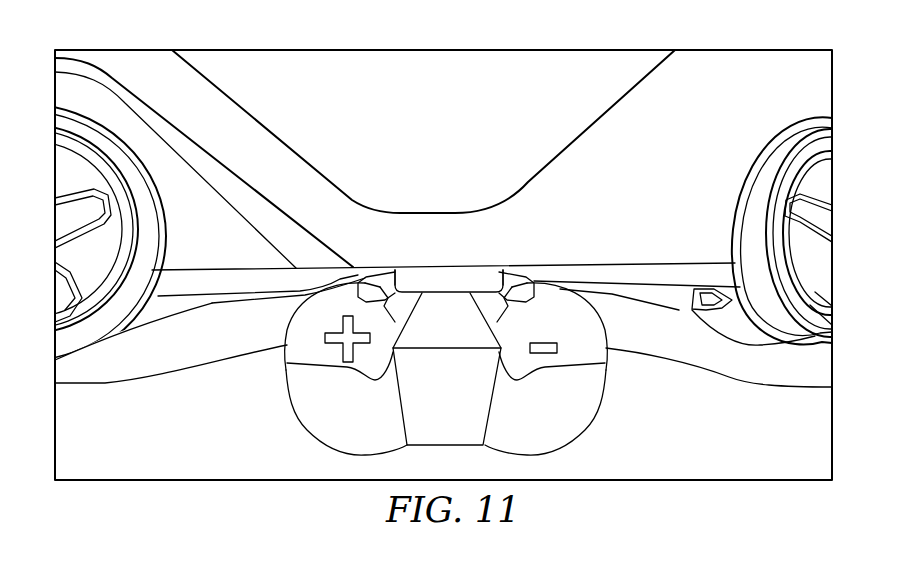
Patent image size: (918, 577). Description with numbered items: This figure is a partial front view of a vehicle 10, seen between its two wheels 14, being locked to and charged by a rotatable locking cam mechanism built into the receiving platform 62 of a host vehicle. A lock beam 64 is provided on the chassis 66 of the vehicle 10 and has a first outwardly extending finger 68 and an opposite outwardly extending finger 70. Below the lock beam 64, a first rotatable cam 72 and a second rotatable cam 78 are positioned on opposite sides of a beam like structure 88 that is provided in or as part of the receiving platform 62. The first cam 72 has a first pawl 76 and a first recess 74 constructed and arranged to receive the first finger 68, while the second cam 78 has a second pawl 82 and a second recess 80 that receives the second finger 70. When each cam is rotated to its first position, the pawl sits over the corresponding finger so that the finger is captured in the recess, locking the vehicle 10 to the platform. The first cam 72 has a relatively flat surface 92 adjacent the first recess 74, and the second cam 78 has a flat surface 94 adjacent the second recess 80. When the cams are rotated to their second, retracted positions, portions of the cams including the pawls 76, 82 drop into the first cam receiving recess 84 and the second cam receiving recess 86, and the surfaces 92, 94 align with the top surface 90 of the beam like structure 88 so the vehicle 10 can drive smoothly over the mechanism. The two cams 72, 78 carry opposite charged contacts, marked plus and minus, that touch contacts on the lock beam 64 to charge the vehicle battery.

The vehicle 10 is at (700, 78).
The wheels 14 is at (98, 140).
The receiving platform 62 is at (87, 417).
The lock beam 64 is at (456, 282).
The chassis 66 is at (238, 281).
The first finger 68 is at (395, 272).
The second finger 70 is at (500, 273).
The first rotatable cam 72 is at (313, 332).
The first recess 74 is at (382, 303).
The first pawl 76 is at (364, 273).
The second rotatable cam 78 is at (581, 350).
The second recess 80 is at (530, 302).
The second pawl 82 is at (527, 280).
The first cam receiving recess 84 is at (313, 422).
The second cam receiving recess 86 is at (600, 376).
The beam like structure 88 is at (455, 405).
The top surface 90 is at (435, 325).
The first flat surface 92 is at (388, 328).
The second flat surface 94 is at (490, 310).